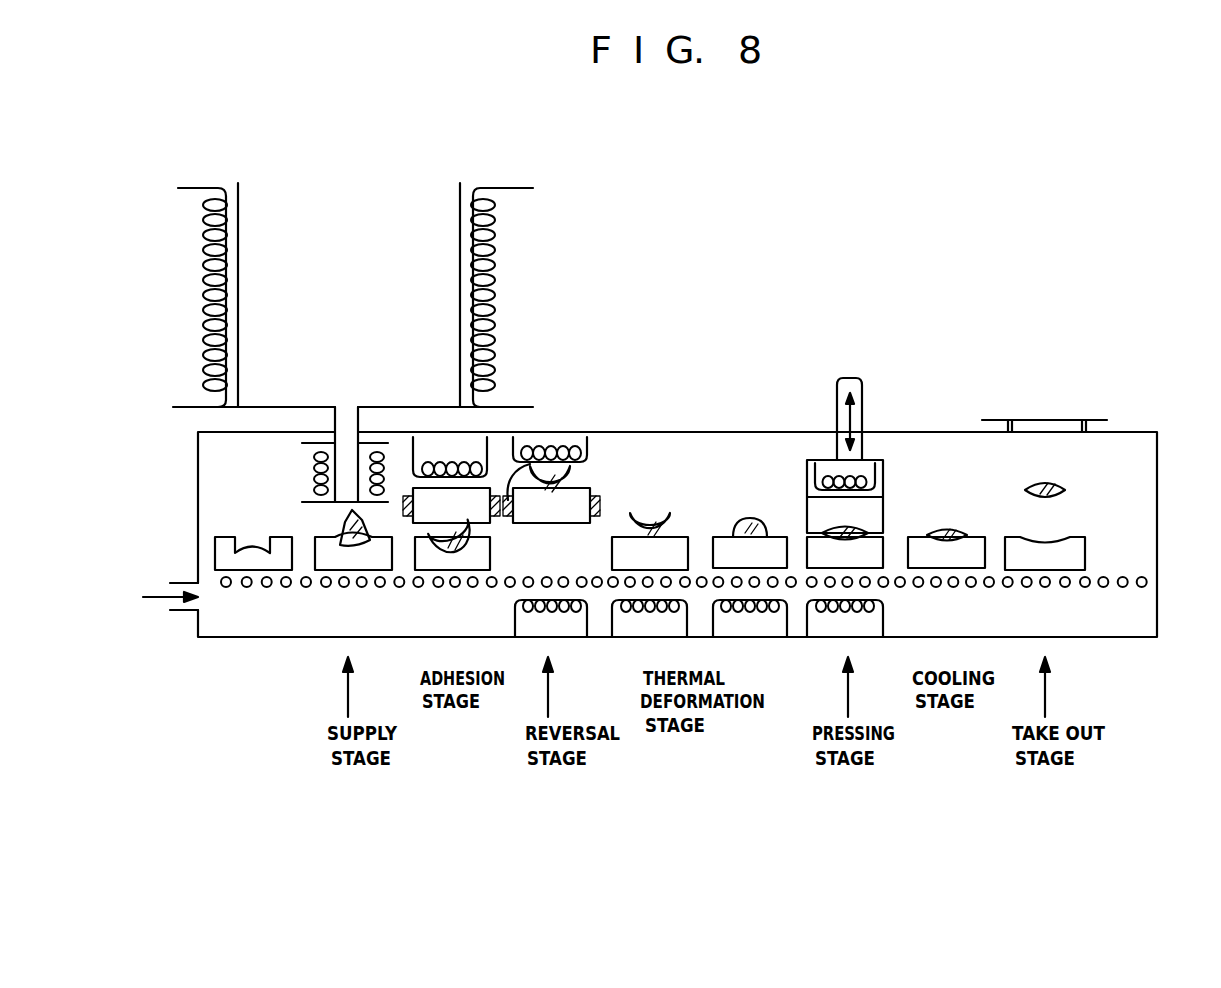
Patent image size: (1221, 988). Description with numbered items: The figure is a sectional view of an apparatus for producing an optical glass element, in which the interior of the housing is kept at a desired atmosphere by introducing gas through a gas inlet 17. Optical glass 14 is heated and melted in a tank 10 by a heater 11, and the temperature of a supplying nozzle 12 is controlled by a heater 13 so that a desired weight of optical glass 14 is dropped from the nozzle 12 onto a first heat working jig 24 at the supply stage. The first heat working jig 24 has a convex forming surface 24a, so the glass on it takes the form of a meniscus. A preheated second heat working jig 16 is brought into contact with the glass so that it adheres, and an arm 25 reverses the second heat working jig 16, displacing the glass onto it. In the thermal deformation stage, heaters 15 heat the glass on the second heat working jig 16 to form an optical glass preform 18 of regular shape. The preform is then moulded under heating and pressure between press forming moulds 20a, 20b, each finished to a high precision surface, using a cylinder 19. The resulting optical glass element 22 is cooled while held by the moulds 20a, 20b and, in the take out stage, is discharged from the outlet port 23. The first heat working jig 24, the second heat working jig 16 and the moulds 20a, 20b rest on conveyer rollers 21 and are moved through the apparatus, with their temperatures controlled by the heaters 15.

The tank 10 is at (428, 197).
The heater 11 is at (497, 320).
The supplying nozzle 12 is at (347, 460).
The heater 13 is at (317, 480).
The optical glass 14 is at (340, 527).
The heater 15 is at (535, 455).
The second heat working jig 16 is at (427, 510).
The gas inlet 17 is at (145, 597).
The optical glass preform 18 is at (749, 519).
The cylinder 19 is at (862, 392).
The press forming mould 20a is at (868, 525).
The press forming mould 20b is at (870, 560).
The conveyer rollers 21 is at (1147, 582).
The optical glass element 22 is at (1062, 487).
The outlet port 23 is at (1058, 418).
The first heat working jig 24 is at (257, 556).
The convex forming surface 24a is at (372, 547).
The arm 25 is at (600, 500).